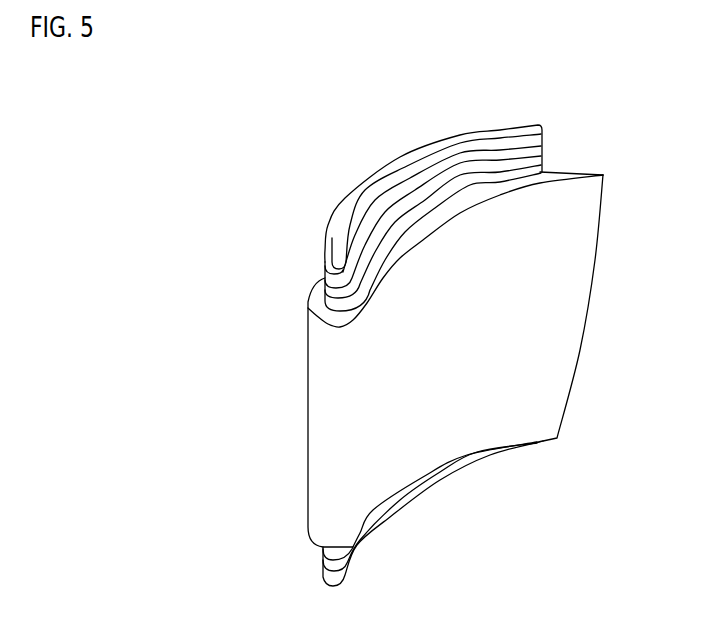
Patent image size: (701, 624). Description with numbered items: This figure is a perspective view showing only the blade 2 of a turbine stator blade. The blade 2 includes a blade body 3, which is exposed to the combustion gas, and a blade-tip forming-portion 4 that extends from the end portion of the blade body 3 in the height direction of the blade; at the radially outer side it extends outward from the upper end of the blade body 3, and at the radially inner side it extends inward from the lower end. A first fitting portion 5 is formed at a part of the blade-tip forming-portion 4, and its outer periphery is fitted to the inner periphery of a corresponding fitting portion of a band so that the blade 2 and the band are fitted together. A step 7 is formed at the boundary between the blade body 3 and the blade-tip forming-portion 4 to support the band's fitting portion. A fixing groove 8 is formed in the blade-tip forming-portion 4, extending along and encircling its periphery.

The blade 2 is at (399, 323).
The blade body 3 is at (455, 359).
The blade-tip forming-portion 4 is at (330, 232).
The first fitting portion 5 is at (333, 300).
The step 7 is at (462, 217).
The fixing groove 8 is at (462, 188).